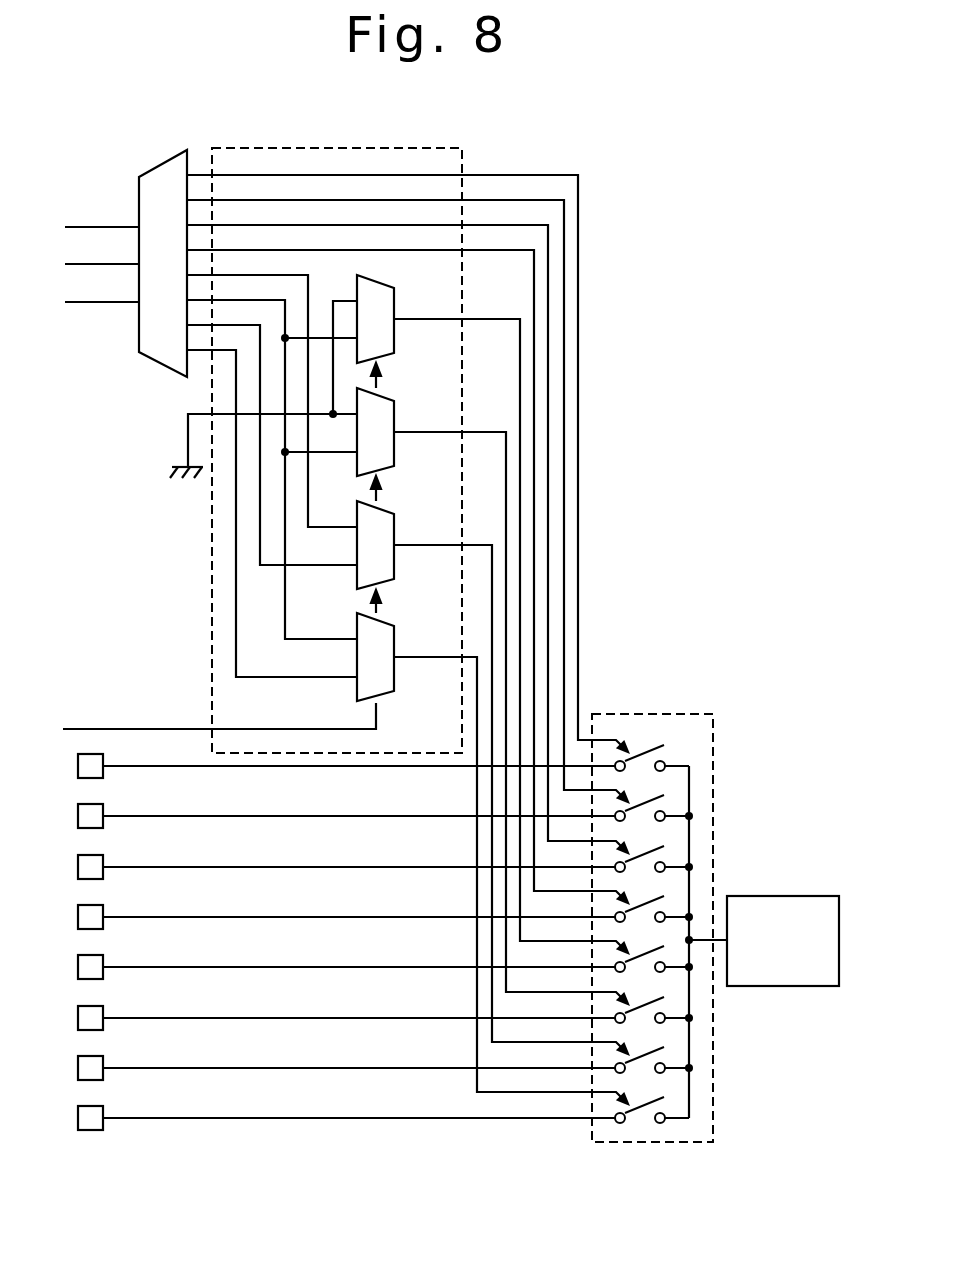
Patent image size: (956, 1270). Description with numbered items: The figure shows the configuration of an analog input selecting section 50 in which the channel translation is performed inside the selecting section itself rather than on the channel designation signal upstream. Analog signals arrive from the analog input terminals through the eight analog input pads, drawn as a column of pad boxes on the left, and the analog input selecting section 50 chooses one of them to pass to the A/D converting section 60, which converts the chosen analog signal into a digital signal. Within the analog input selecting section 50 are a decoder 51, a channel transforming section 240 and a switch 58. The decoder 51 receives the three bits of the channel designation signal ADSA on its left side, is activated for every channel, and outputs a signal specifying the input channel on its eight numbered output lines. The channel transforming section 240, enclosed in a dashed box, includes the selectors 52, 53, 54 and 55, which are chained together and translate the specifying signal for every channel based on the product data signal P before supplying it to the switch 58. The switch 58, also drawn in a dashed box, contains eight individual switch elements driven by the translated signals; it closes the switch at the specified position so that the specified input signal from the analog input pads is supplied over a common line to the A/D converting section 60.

The analog input selecting section 50 is at (691, 252).
The decoder 51 is at (165, 162).
The selector 52 is at (397, 303).
The selector 53 is at (397, 416).
The selector 54 is at (397, 529).
The selector 55 is at (397, 641).
The switch 58 is at (676, 714).
The A/D converting section 60 is at (783, 896).
The channel transforming section 240 is at (340, 148).